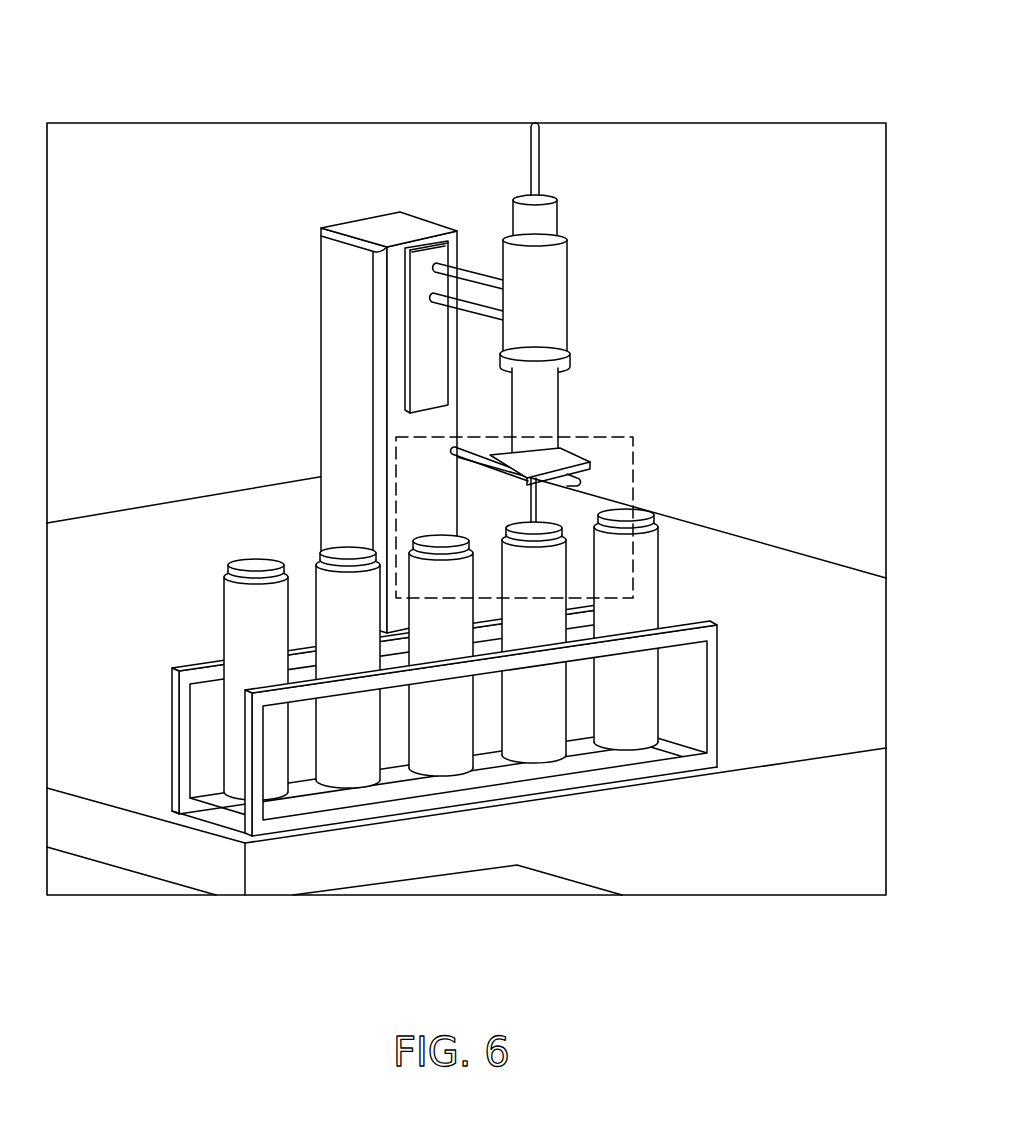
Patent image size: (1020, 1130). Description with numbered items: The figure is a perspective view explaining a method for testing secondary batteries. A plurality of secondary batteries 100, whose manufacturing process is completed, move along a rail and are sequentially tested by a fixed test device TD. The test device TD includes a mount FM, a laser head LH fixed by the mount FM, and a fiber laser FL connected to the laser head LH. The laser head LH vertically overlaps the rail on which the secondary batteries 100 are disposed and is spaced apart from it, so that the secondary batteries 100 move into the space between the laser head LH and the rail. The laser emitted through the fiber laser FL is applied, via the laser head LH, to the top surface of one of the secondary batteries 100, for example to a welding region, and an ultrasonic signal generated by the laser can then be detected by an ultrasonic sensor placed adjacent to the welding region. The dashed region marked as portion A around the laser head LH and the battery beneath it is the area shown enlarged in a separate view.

The test device TD is at (563, 57).
The mount FM is at (397, 215).
The laser head LH is at (513, 258).
The fiber laser FL is at (535, 138).
The portion A is at (633, 470).
The secondary batteries 100 is at (345, 768).